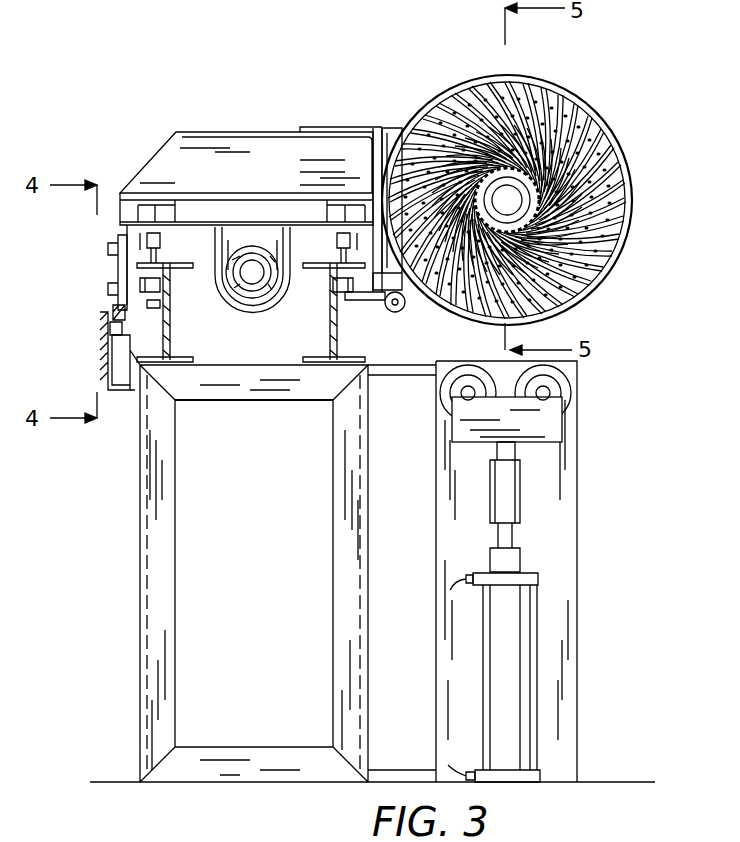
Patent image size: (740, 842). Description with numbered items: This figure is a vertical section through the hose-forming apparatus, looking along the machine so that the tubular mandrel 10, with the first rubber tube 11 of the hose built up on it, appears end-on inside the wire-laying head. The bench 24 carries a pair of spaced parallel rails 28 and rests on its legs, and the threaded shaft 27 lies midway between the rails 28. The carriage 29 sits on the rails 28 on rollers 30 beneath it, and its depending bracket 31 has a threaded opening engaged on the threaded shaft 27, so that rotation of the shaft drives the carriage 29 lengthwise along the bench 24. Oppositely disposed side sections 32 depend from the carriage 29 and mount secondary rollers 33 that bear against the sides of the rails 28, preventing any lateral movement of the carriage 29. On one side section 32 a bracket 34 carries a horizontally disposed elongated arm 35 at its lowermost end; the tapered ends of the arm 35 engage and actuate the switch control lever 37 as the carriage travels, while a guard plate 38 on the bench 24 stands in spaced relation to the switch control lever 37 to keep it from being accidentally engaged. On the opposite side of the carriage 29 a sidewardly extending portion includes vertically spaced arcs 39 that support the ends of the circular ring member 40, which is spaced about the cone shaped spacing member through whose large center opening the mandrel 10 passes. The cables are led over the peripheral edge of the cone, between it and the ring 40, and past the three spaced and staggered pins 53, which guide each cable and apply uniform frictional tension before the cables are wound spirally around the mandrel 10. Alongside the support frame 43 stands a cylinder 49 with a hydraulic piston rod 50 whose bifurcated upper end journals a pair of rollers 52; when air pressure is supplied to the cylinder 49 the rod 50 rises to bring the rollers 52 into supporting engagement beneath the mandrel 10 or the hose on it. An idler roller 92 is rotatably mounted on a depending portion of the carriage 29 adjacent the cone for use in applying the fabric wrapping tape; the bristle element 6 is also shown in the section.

The brush wheel 6 is at (560, 108).
The tubular mandrel 10 is at (507, 200).
The first rubber tube 11 is at (508, 207).
The bench 24 is at (250, 392).
The threaded shaft 27 is at (258, 298).
The rails 28 is at (170, 322).
The carriage 29 is at (233, 180).
The rollers 30 is at (160, 242).
The depending bracket 31 is at (230, 300).
The depending side sections 32 is at (150, 308).
The secondary rollers 33 is at (160, 285).
The bracket 34 is at (115, 272).
The elongated arm 35 is at (112, 318).
The switch control lever 37 is at (110, 336).
The guard plate 38 is at (102, 356).
The arcs 39 is at (390, 126).
The circular ring member 40 is at (628, 252).
The support frame 43 is at (575, 650).
The cylinder 49 is at (525, 635).
The hydraulic piston rod 50 is at (520, 498).
The rollers 52 is at (562, 388).
The pins 53 is at (600, 165).
The idler roller 92 is at (400, 312).